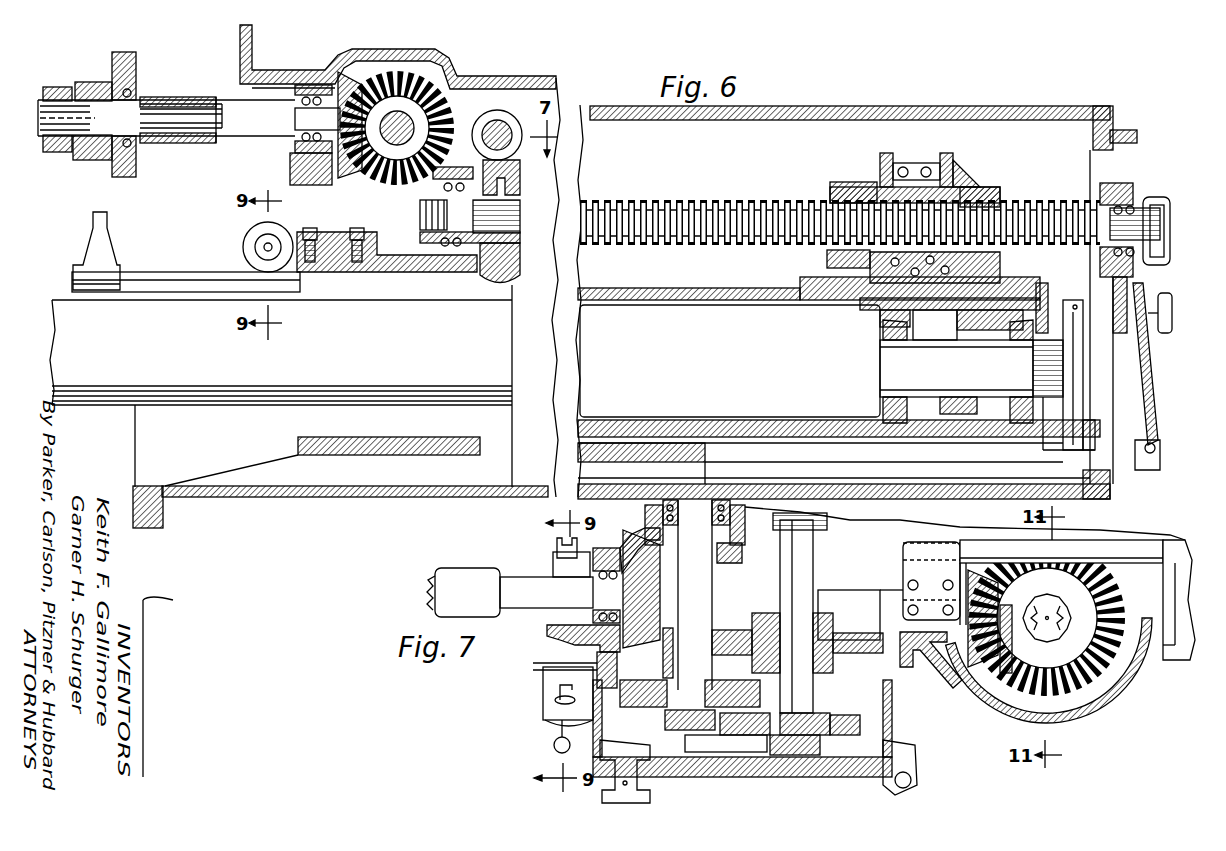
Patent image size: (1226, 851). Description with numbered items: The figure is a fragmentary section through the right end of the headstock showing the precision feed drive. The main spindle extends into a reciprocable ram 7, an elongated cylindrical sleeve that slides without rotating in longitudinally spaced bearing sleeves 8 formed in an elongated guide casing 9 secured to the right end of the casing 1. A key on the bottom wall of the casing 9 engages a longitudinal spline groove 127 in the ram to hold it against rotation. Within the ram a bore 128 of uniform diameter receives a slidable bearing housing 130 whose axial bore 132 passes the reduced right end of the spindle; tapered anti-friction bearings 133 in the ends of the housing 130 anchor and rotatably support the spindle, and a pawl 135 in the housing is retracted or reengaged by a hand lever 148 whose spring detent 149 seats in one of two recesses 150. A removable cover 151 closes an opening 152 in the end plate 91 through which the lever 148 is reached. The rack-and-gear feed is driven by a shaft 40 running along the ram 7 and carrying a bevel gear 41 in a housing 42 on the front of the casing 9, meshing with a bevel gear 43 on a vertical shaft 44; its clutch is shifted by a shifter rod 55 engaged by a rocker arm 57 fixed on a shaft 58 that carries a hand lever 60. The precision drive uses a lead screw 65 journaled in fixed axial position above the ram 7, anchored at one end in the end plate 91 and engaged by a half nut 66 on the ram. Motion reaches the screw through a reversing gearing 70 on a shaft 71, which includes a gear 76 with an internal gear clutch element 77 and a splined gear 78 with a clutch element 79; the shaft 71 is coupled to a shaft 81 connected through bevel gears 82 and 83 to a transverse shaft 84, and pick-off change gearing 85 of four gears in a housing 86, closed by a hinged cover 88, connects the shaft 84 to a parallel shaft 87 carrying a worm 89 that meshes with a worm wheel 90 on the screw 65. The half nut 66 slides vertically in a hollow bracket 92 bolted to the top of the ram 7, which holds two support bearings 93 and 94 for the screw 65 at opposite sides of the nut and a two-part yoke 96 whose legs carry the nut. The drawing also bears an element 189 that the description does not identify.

In FIG. 6, the casing 1 is at (136, 62).
In FIG. 6, the ram 7 is at (922, 450).
In FIG. 6, the bearing sleeves 8 is at (297, 441).
In FIG. 6, the guide casing 9 is at (307, 497).
In FIG. 7, the guide casing 9 is at (557, 627).
In FIG. 7, the shaft 40 is at (850, 598).
In FIG. 7, the bevel gear 41 is at (966, 675).
In FIG. 7, the housing 42 is at (1026, 670).
In FIG. 7, the bevel gear 43 is at (1112, 598).
In FIG. 7, the vertical shaft 44 is at (1047, 637).
In FIG. 6, the shifter rod 55 is at (200, 275).
In FIG. 6, the rocker arm 57 is at (262, 262).
In FIG. 6, the shaft 58 is at (275, 240).
In FIG. 7, the hand lever 60 is at (556, 727).
In FIG. 6, the lead screw 65 is at (700, 202).
In FIG. 6, the half nut 66 is at (882, 272).
In FIG. 6, the reversing gearing 70 is at (65, 74).
In FIG. 6, the shaft 71 is at (152, 140).
In FIG. 7, the shaft 71 is at (428, 585).
In FIG. 6, the gear 76 is at (97, 82).
In FIG. 6, the internal gear clutch element 77 is at (82, 86).
In FIG. 6, the gear 78 is at (58, 152).
In FIG. 6, the clutch element 79 is at (80, 153).
In FIG. 6, the shaft 81 is at (234, 112).
In FIG. 7, the shaft 81 is at (523, 588).
In FIG. 6, the bevel gear 82 is at (352, 177).
In FIG. 7, the bevel gear 82 is at (628, 545).
In FIG. 6, the bevel gear 83 is at (390, 186).
In FIG. 7, the bevel gear 83 is at (741, 553).
In FIG. 6, the transverse shaft 84 is at (400, 106).
In FIG. 7, the transverse shaft 84 is at (712, 582).
In FIG. 7, the pick-off change gearing 85 is at (740, 750).
In FIG. 7, the housing 86 is at (892, 710).
In FIG. 6, the shaft 87 is at (482, 140).
In FIG. 7, the shaft 87 is at (815, 566).
In FIG. 7, the cover 88 is at (832, 778).
In FIG. 6, the worm 89 is at (497, 111).
In FIG. 7, the worm 89 is at (827, 525).
In FIG. 6, the worm wheel 90 is at (516, 258).
In FIG. 6, the end plate 91 is at (1135, 162).
In FIG. 6, the hollow bracket 92 is at (827, 258).
In FIG. 6, the support bearing 93 is at (832, 191).
In FIG. 6, the support bearing 94 is at (998, 198).
In FIG. 6, the two-part yoke 96 is at (920, 162).
In FIG. 6, the longitudinal spline groove 127 is at (795, 440).
In FIG. 6, the bore 128 is at (722, 296).
In FIG. 6, the bearing housing 130 is at (950, 373).
In FIG. 6, the axial bore 132 is at (925, 397).
In FIG. 6, the tapered anti-friction bearings 133 is at (884, 318).
In FIG. 6, the pawl 135 is at (958, 412).
In FIG. 6, the hand lever 148 is at (1073, 350).
In FIG. 6, the spring detent 149 is at (1086, 448).
In FIG. 6, the recesses 150 is at (1047, 455).
In FIG. 6, the removable cover 151 is at (1148, 382).
In FIG. 6, the opening 152 is at (1152, 440).
In FIG. 6, the retainer plate 189 is at (1045, 298).